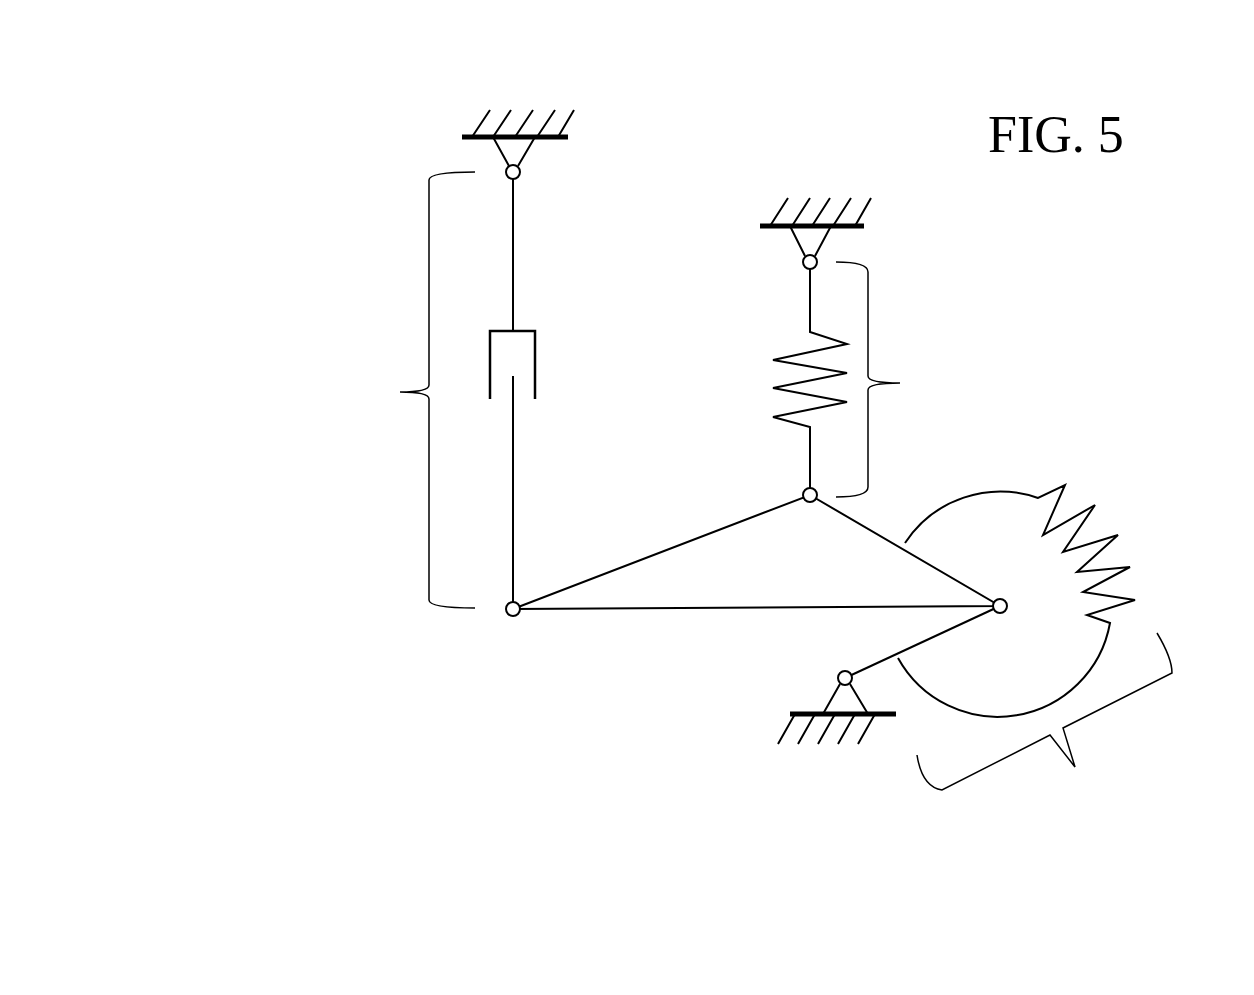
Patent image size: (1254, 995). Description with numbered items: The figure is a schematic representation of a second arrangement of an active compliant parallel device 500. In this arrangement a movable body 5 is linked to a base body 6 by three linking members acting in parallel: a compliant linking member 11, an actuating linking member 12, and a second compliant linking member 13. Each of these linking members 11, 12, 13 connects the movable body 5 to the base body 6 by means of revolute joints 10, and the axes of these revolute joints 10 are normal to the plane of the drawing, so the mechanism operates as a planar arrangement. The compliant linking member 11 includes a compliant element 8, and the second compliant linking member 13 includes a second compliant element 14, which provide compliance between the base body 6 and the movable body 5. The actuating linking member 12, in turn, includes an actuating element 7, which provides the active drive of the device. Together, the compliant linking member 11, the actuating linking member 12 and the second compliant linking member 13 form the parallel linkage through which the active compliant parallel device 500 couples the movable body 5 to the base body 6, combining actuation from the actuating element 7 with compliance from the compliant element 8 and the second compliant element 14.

The active compliant parallel device 500 is at (355, 758).
The movable body 5 is at (598, 628).
The base body 6 is at (825, 178).
The actuating element 7 is at (545, 364).
The compliant element 8 is at (851, 354).
The revolute joints 10 is at (527, 173).
The compliant linking member 11 is at (885, 379).
The actuating linking member 12 is at (405, 390).
The second compliant linking member 13 is at (1044, 717).
The second compliant element 14 is at (1139, 528).